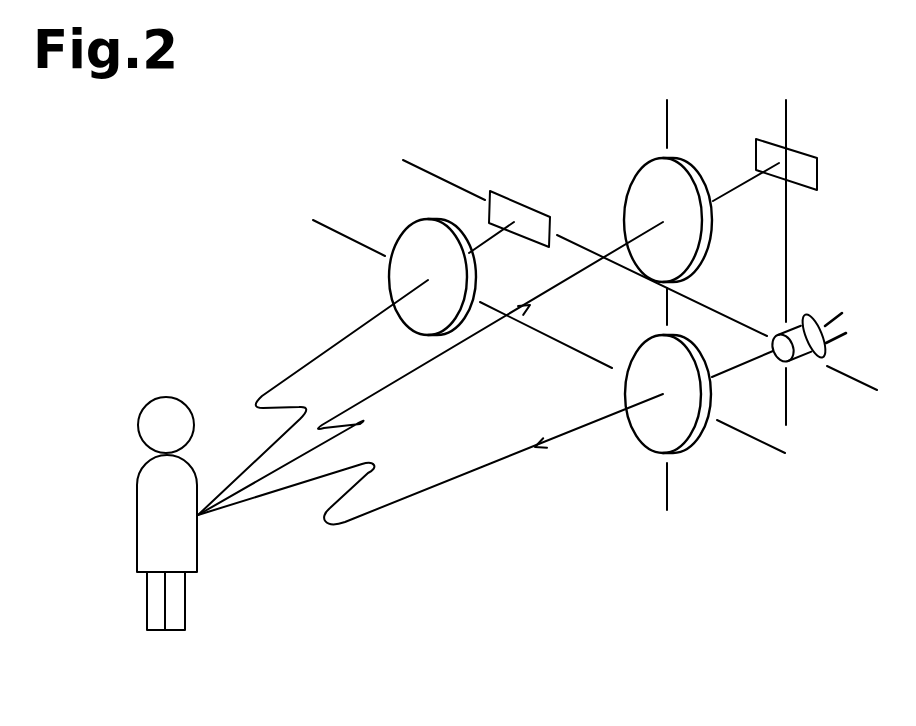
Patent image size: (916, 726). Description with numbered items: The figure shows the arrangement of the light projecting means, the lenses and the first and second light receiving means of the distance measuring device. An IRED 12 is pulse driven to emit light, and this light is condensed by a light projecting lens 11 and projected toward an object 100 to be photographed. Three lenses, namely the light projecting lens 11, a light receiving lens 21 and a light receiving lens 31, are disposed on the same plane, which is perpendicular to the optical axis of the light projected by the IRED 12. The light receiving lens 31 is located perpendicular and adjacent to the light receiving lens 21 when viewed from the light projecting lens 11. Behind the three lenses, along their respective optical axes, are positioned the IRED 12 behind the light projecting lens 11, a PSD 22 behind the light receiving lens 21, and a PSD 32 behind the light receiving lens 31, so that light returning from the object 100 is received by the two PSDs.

The object 100 is at (166, 396).
The light receiving lens 21 is at (389, 280).
The PSD 22 is at (523, 201).
The light receiving lens 31 is at (686, 157).
The PSD 32 is at (818, 176).
The light projecting lens 11 is at (678, 452).
The IRED 12 is at (818, 312).